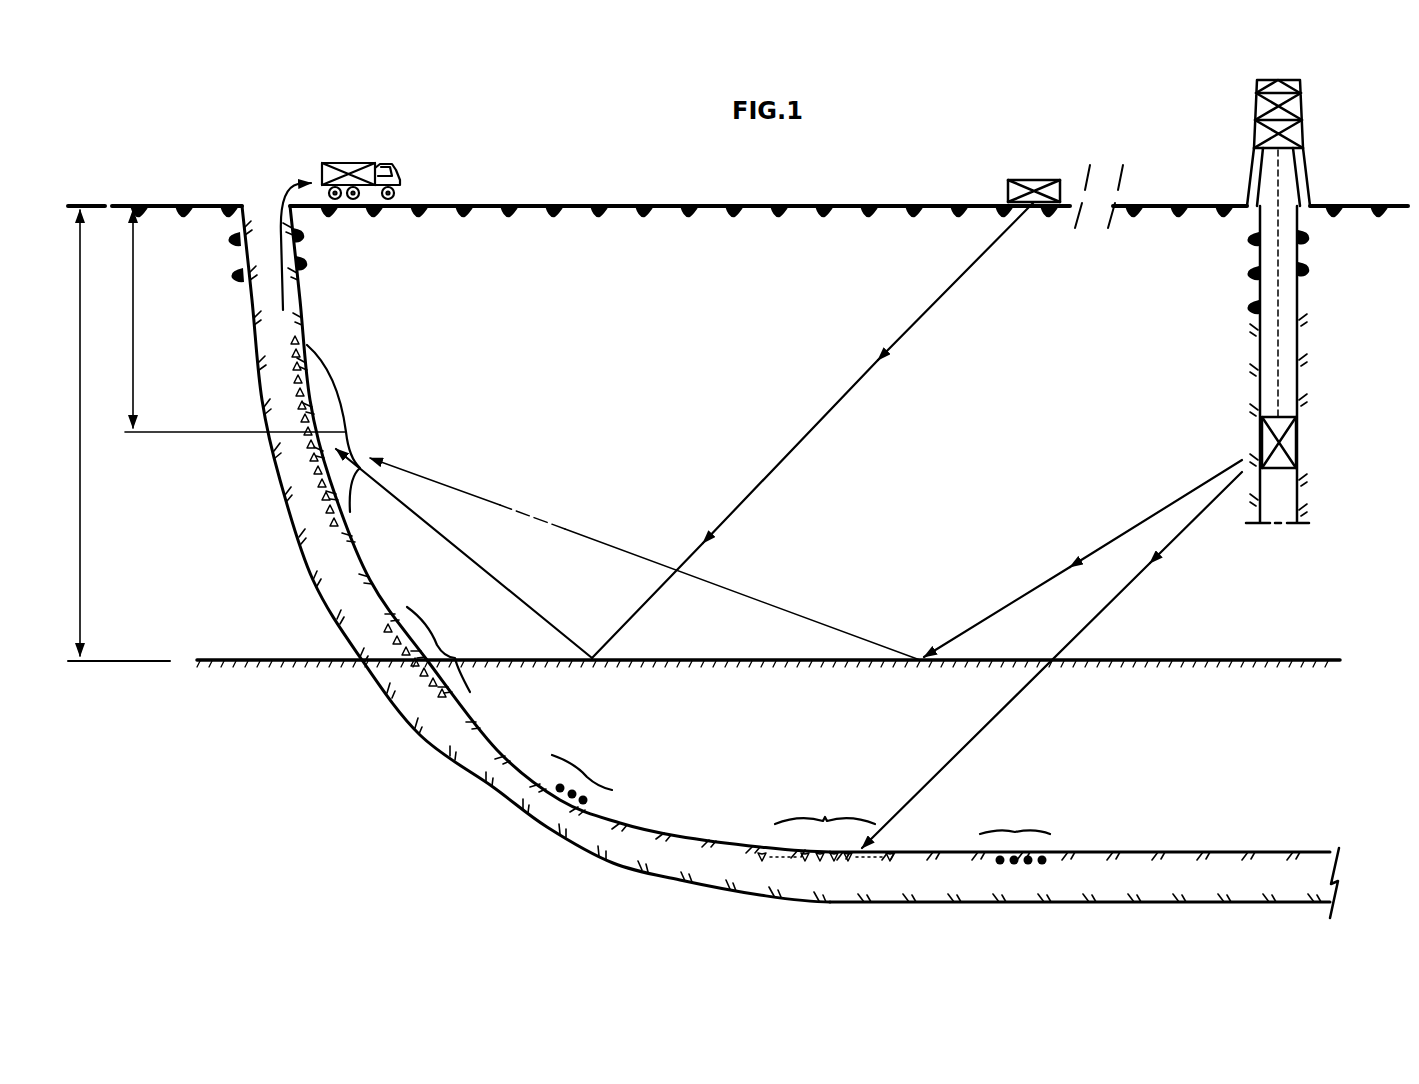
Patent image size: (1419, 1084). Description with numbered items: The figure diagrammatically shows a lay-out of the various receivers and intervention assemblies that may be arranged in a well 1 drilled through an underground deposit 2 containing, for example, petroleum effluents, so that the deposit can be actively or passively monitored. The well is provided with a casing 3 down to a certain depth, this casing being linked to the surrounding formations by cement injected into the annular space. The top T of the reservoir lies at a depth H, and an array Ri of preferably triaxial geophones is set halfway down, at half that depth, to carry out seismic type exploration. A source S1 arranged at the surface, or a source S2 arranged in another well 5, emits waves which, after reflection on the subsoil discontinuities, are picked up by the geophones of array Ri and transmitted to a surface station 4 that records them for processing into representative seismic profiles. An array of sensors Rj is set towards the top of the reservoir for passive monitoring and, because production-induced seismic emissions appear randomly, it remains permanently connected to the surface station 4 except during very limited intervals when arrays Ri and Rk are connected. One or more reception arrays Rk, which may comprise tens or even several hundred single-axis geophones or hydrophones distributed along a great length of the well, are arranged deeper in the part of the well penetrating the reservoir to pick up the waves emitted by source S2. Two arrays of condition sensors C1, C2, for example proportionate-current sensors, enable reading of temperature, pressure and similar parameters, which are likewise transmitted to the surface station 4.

The well 1 is at (258, 258).
The underground deposit 2 is at (1155, 772).
The casing 3 is at (700, 835).
The surface station 4 is at (345, 162).
The another well 5 is at (1290, 352).
The source S1 is at (1045, 178).
The source S2 is at (1290, 443).
The top of the reservoir T is at (1201, 654).
The array of geophones Ri is at (333, 431).
The array of sensors Rj is at (427, 652).
The reception array Rk is at (826, 825).
The array of condition sensors C1 is at (582, 775).
The array of condition sensors C2 is at (1015, 832).
The depth H is at (110, 435).